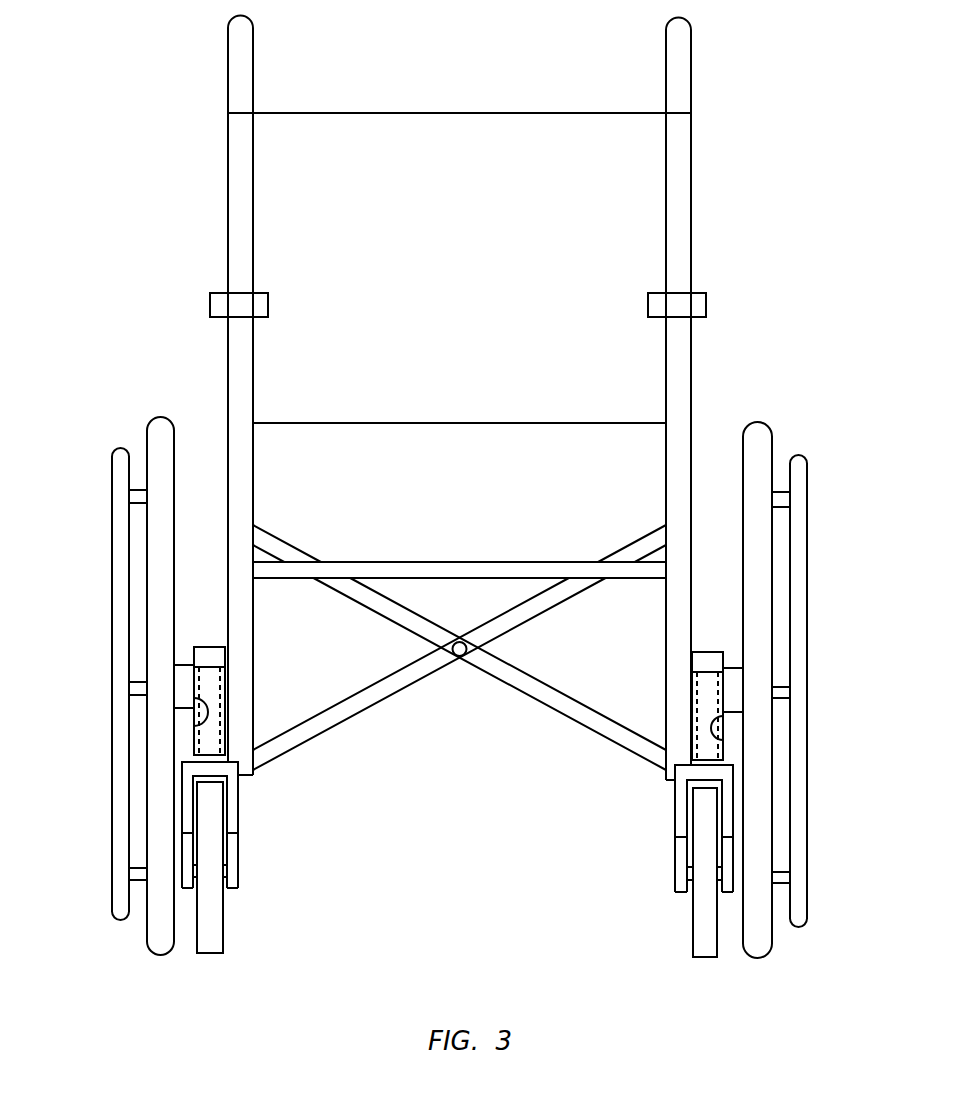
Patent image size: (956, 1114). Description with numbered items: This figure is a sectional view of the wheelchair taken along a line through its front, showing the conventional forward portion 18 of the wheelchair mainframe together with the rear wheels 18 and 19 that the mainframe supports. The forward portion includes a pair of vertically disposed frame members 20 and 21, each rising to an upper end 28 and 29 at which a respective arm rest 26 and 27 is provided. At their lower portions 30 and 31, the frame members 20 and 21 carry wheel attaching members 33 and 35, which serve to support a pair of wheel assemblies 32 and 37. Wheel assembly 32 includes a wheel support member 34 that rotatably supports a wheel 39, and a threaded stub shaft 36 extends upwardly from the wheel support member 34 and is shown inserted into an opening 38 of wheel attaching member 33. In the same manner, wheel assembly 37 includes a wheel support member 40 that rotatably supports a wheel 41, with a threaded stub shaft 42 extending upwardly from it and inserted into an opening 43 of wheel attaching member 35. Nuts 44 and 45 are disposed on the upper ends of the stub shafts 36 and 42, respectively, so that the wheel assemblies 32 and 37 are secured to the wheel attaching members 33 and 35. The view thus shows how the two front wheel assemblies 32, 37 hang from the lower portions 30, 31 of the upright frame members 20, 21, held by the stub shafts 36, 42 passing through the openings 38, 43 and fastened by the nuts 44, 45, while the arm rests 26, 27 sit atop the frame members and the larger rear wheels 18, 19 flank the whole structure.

The rear wheel / forward portion 18 is at (772, 423).
The rear wheel 19 is at (147, 420).
The frame member 20 is at (691, 408).
The frame member 21 is at (228, 386).
The arm rest 26 is at (678, 295).
The arm rest 27 is at (240, 293).
The upper end 28 is at (691, 352).
The upper end 29 is at (228, 345).
The lower portion 30 is at (666, 705).
The lower portion 31 is at (253, 699).
The wheel assembly 32 is at (692, 873).
The wheel attaching member 33 is at (712, 690).
The wheel support member 34 is at (675, 850).
The wheel attaching member 35 is at (210, 685).
The threaded stub shaft 36 is at (708, 765).
The wheel assembly 37 is at (197, 858).
The opening 38 is at (720, 735).
The wheel 39 is at (693, 945).
The wheel support member 40 is at (240, 858).
The wheel 41 is at (223, 935).
The threaded stub shaft 42 is at (212, 757).
The opening 43 is at (200, 705).
The nut 44 is at (706, 652).
The nut 45 is at (213, 647).